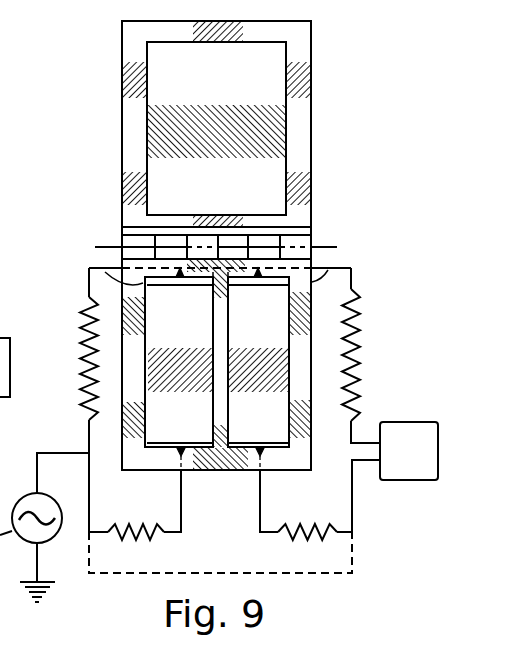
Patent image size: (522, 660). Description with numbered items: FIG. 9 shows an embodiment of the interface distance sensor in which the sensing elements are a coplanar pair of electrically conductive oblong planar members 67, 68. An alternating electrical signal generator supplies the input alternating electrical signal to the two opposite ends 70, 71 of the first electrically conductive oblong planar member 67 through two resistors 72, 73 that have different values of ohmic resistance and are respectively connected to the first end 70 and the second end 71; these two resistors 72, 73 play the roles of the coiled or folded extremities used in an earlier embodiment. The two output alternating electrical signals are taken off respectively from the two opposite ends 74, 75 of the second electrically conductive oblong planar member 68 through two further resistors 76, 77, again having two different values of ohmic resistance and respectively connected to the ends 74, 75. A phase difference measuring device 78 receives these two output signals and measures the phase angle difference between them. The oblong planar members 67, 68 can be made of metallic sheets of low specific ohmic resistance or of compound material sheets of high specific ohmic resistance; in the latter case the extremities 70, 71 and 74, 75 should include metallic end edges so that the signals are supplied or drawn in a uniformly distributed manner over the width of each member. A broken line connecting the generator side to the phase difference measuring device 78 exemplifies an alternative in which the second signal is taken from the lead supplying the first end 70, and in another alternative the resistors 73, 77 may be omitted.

The first electrically conductive oblong planar member 67 is at (188, 420).
The second electrically conductive oblong planar member 68 is at (257, 418).
The first end of the first electrically conductive oblong planar member 70 is at (100, 263).
The second end of the first electrically conductive oblong planar member 71 is at (163, 448).
The resistor 72 is at (82, 350).
The resistor 73 is at (125, 538).
The first end of the second electrically conductive oblong planar member 74 is at (333, 262).
The second end of the second electrically conductive oblong planar member 75 is at (277, 448).
The resistor 76 is at (357, 348).
The resistor 77 is at (313, 538).
The phase difference measuring device 78 is at (405, 422).